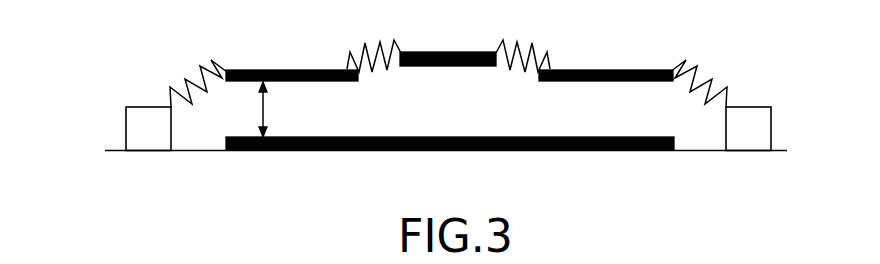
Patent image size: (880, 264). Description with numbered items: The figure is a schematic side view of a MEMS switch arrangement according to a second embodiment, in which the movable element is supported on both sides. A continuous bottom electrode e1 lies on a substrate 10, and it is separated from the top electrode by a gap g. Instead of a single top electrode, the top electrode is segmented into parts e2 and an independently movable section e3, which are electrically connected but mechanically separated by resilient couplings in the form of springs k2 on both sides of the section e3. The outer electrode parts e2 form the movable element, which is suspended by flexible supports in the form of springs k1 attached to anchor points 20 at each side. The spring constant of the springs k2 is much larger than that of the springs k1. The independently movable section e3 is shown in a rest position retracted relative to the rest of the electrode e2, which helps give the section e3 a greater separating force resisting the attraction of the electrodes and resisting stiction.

The substrate 10 is at (446, 177).
The anchor points 20 is at (448, 129).
The bottom electrode e1 is at (450, 160).
The top electrode part e2 is at (449, 61).
The independently movable section e3 is at (448, 45).
The springs k1 is at (445, 76).
The spring k2 is at (449, 44).
The gap g is at (273, 109).